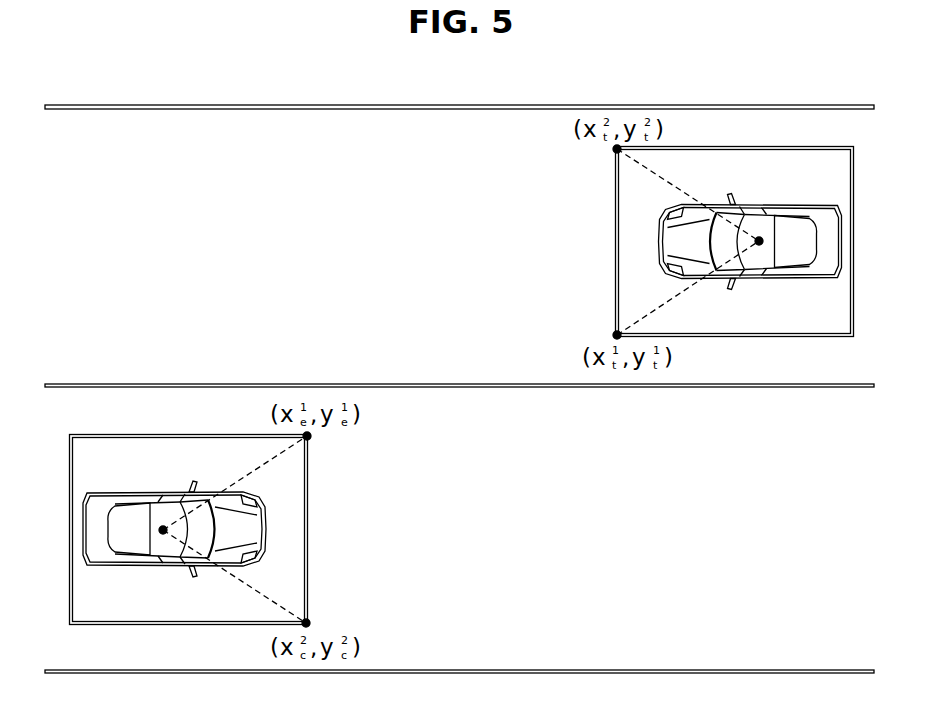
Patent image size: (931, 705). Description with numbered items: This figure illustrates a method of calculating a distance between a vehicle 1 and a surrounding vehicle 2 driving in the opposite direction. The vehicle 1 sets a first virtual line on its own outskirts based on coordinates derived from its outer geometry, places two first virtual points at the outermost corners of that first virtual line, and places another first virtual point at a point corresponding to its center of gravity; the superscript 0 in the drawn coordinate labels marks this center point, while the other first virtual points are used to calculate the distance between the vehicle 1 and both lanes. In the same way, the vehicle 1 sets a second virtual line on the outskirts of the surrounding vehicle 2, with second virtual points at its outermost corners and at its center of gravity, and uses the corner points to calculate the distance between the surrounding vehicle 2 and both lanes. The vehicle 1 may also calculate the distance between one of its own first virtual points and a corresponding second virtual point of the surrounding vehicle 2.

The vehicle center point 0 is at (463, 418).
The vehicle 1 is at (247, 529).
The surrounding vehicle 2 is at (672, 238).